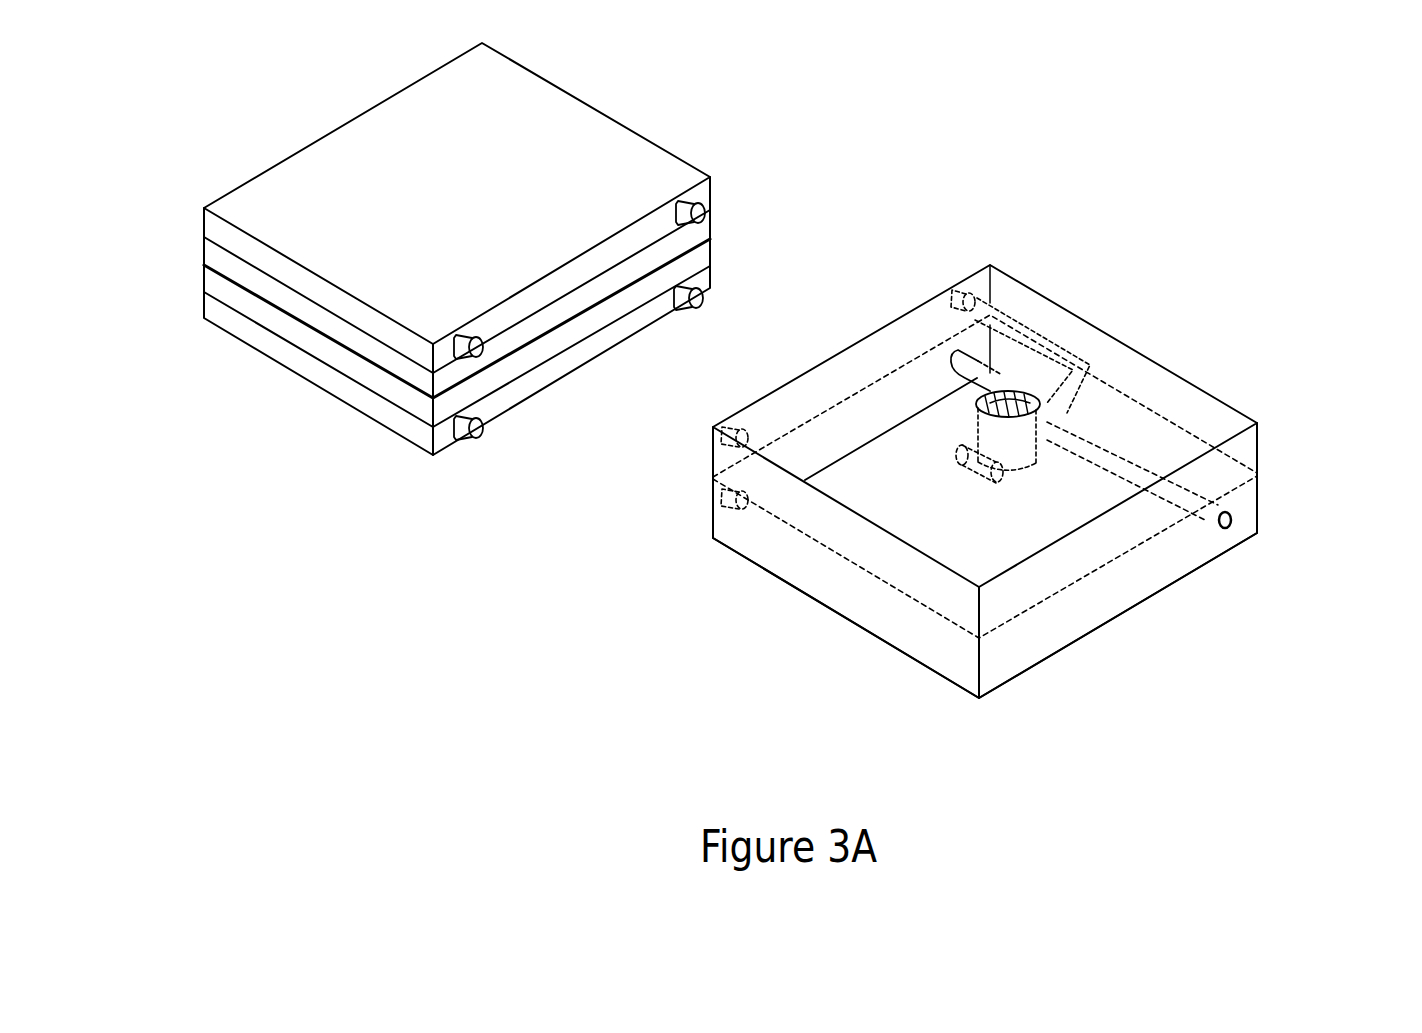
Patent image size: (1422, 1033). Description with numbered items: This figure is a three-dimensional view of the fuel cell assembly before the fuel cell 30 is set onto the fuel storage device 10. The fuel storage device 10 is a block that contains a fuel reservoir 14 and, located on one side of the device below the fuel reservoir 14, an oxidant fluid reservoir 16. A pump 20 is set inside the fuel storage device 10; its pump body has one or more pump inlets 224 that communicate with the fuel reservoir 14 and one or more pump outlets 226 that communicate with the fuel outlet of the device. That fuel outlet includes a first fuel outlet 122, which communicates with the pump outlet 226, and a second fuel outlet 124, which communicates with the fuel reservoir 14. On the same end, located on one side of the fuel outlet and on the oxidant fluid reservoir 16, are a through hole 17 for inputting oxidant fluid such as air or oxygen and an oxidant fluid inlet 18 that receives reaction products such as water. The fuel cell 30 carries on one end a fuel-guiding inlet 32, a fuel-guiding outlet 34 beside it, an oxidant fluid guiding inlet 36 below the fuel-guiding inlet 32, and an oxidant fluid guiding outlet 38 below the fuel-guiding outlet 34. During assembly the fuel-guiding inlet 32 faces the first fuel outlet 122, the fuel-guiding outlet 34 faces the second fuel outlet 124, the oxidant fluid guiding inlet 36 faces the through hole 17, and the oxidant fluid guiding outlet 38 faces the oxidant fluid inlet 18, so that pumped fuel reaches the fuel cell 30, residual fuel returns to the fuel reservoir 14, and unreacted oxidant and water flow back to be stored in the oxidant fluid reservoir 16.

The fuel storage device 10 is at (1257, 313).
The fuel reservoir 14 is at (1243, 452).
The oxidant fluid reservoir 16 is at (1128, 580).
The through hole 17 is at (1232, 518).
The oxidant fluid inlet 18 is at (722, 505).
The pump 20 is at (955, 517).
The fuel cell 30 is at (238, 123).
The fuel-guiding inlet 32 is at (712, 196).
The fuel-guiding outlet 34 is at (477, 338).
The oxidant fluid guiding inlet 36 is at (712, 288).
The oxidant fluid guiding outlet 38 is at (480, 428).
The first fuel outlet 122 is at (963, 298).
The second fuel outlet 124 is at (735, 433).
The pump inlet 224 is at (983, 463).
The pump outlet 226 is at (1040, 415).